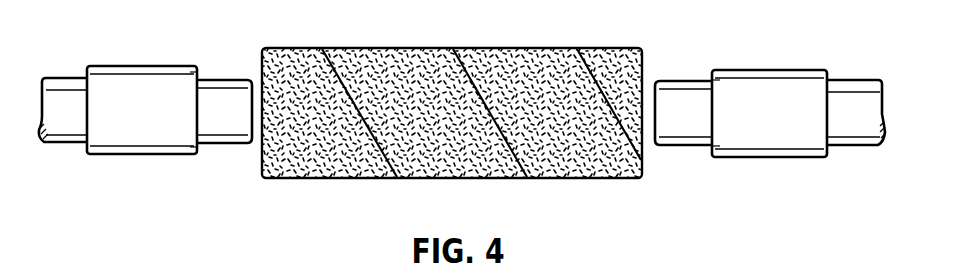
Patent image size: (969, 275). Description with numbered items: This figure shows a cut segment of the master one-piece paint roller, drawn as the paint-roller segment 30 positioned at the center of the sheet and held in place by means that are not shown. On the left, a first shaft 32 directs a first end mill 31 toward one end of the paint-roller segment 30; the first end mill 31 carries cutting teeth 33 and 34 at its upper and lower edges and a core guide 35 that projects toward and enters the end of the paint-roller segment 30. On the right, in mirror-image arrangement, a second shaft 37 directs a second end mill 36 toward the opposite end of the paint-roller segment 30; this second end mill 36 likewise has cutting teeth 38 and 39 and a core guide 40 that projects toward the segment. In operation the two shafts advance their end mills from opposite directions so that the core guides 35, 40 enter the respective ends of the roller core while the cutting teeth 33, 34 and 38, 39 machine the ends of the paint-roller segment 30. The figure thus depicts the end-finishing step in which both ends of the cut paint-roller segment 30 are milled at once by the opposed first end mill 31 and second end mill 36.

The paint-roller segment 30 is at (406, 48).
The first end mill 31 is at (139, 134).
The first shaft 32 is at (70, 126).
The cutting tooth 33 is at (199, 73).
The cutting tooth 34 is at (196, 148).
The core guide 35 is at (232, 125).
The second end mill 36 is at (760, 136).
The second shaft 37 is at (855, 124).
The cutting tooth 38 is at (711, 78).
The cutting tooth 39 is at (710, 150).
The core guide 40 is at (679, 127).